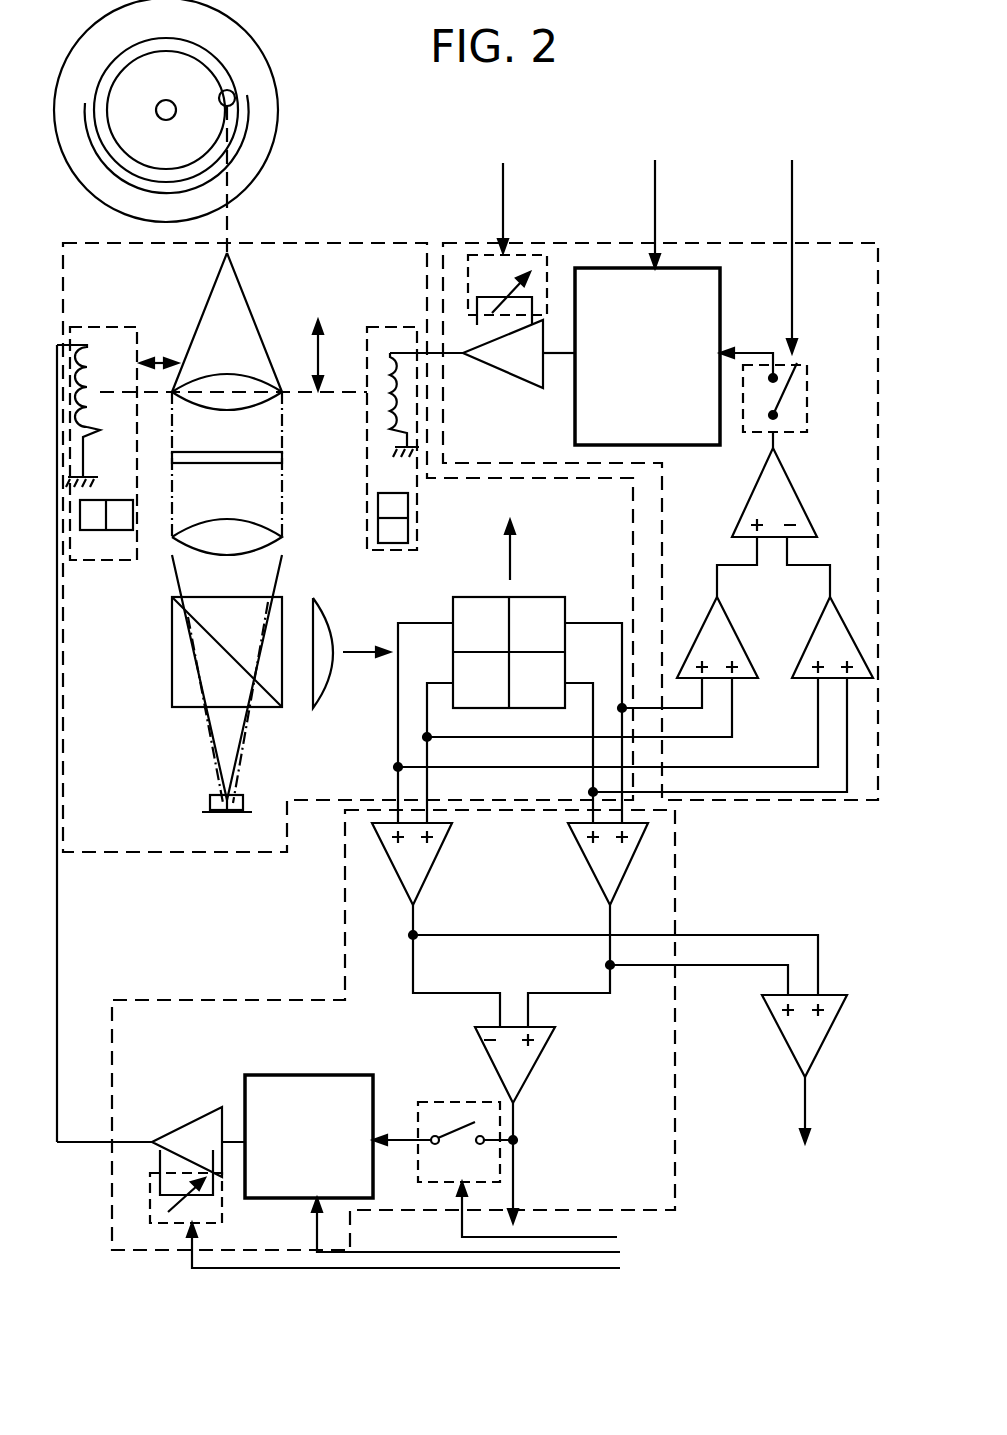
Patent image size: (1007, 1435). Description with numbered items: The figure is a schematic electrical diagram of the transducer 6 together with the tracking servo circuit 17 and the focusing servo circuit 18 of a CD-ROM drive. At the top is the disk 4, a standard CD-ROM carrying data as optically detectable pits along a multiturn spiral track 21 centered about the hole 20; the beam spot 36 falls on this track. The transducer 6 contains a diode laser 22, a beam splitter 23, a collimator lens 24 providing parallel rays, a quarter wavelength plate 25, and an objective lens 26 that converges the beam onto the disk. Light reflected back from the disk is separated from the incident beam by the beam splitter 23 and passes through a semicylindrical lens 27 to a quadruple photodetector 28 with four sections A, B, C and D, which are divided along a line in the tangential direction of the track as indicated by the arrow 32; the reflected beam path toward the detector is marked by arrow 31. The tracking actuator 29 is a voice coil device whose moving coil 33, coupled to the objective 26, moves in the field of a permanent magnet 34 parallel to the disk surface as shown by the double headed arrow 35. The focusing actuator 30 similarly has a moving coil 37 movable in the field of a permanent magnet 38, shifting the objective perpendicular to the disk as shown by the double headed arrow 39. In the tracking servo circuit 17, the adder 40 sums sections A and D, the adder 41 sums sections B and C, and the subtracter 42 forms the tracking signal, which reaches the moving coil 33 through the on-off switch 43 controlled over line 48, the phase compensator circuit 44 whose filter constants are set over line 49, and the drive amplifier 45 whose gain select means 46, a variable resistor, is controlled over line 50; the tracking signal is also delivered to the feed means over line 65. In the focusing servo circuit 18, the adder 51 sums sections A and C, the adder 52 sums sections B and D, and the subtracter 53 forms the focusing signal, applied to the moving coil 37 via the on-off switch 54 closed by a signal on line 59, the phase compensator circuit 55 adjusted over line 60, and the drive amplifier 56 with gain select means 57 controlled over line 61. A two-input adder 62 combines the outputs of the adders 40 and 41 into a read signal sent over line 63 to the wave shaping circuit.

The disk 4 is at (282, 64).
The hole 20 is at (175, 103).
The spiral track 21 is at (243, 122).
The beam spot 36 is at (236, 98).
The transducer 6 is at (355, 243).
The tracking actuator 29 is at (100, 327).
The moving coil 33 is at (100, 457).
The permanent magnet 34 is at (110, 530).
The double headed arrow 35 is at (155, 360).
The objective lens 26 is at (287, 397).
The quarter wavelength plate 25 is at (282, 457).
The collimator lens 24 is at (282, 530).
The beam splitter 23 is at (172, 670).
The diode laser 22 is at (202, 810).
The semicylindrical lens 27 is at (328, 625).
The reflected beam arrow 31 is at (355, 660).
The focusing actuator 30 is at (390, 327).
The moving coil 37 is at (372, 356).
The permanent magnet 38 is at (410, 525).
The double headed arrow 39 is at (316, 355).
The quadruple photodetector 28 is at (545, 597).
The arrow 32 is at (505, 565).
The focusing servo circuit 18 is at (750, 800).
The gain select means 57 is at (465, 268).
The drive amplifier 56 is at (500, 375).
The phase compensator circuit 55 is at (575, 393).
The line 61 is at (503, 197).
The line 60 is at (655, 197).
The line 59 is at (792, 205).
The on-off switch 54 is at (807, 398).
The subtracter 53 is at (800, 493).
The adder 51 is at (730, 622).
The adder 52 is at (808, 626).
The tracking servo circuit 17 is at (678, 1195).
The adder 41 is at (432, 862).
The adder 40 is at (573, 853).
The subtracter 42 is at (553, 1037).
The line 65 is at (513, 1185).
The on-off switch 43 is at (448, 1100).
The adder 62 is at (775, 1030).
The line 63 is at (803, 1083).
The phase compensator circuit 44 is at (300, 1075).
The drive amplifier 45 is at (186, 1107).
The gain select means 46 is at (162, 1188).
The line 48 is at (617, 1237).
The line 49 is at (620, 1252).
The line 50 is at (620, 1268).